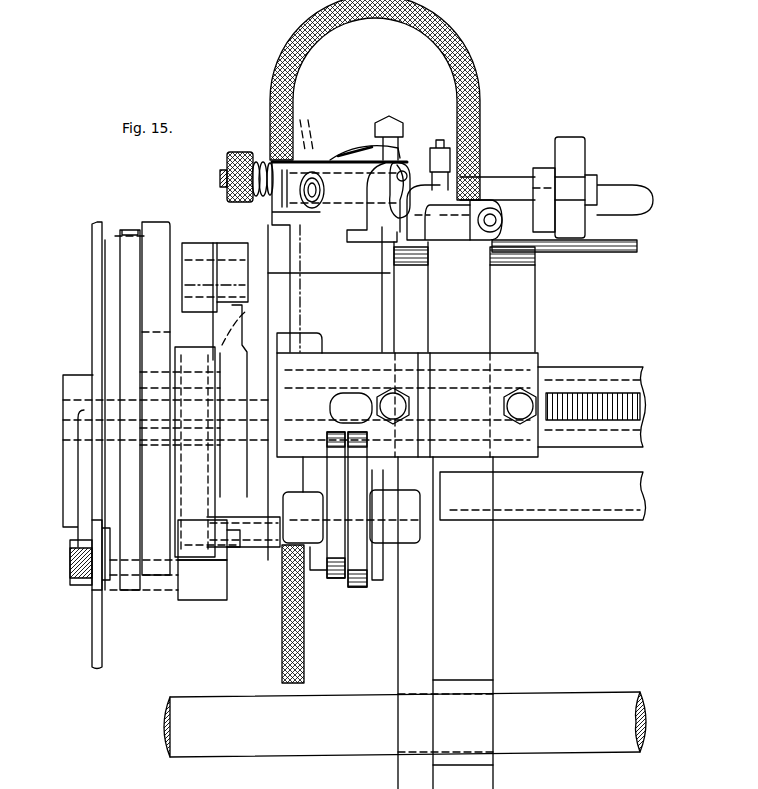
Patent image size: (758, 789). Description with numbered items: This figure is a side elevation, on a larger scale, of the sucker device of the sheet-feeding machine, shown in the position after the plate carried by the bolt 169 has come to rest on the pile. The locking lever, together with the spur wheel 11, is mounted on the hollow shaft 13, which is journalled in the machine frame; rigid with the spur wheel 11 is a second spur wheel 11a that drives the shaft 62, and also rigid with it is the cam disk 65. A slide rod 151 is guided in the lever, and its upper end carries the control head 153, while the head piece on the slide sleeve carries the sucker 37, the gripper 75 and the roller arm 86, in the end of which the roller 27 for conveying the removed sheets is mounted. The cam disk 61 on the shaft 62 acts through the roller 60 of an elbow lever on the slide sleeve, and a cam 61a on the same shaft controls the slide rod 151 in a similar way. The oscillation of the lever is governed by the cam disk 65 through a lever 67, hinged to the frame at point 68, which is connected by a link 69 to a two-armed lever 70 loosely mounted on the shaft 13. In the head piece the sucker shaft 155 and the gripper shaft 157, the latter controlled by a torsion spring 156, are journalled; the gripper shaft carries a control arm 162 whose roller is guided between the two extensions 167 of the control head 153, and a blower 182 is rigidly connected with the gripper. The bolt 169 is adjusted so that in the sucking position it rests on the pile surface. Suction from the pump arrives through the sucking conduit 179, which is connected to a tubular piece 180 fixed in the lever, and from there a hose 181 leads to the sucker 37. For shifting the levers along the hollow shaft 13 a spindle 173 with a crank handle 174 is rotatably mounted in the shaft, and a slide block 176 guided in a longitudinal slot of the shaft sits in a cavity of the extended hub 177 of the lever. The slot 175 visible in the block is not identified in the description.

The spur wheel 11 is at (128, 231).
The spur wheel 11a is at (191, 349).
The hollow shaft 13 is at (584, 378).
The roller 27 is at (580, 153).
The sucker 37 is at (430, 237).
The roller 60 is at (359, 580).
The cam disk 61 is at (366, 551).
The cam 61a is at (340, 554).
The shaft 62 is at (541, 503).
The cam disk 65 is at (158, 230).
The lever 67 is at (219, 566).
The hinge point 68 is at (208, 553).
The link 69 is at (199, 254).
The two-armed lever 70 is at (234, 345).
The gripper 75 is at (364, 238).
The roller arm 86 is at (541, 169).
The slide rod 151 is at (341, 151).
The control head 153 is at (369, 146).
The sucker shaft 155 is at (496, 239).
The torsion spring 156 is at (247, 153).
The gripper shaft 157 is at (222, 178).
The control arm 162 is at (273, 197).
The extensions 167 is at (313, 125).
The bolt 169 is at (434, 172).
The spindle 173 is at (588, 421).
The crank handle 174 is at (72, 485).
The slot 175 is at (350, 408).
The slide block 176 is at (541, 397).
The extended hub 177 is at (479, 457).
The sucking conduit 179 is at (296, 629).
The tubular piece 180 is at (287, 338).
The hose 181 is at (288, 56).
The blower 182 is at (404, 251).